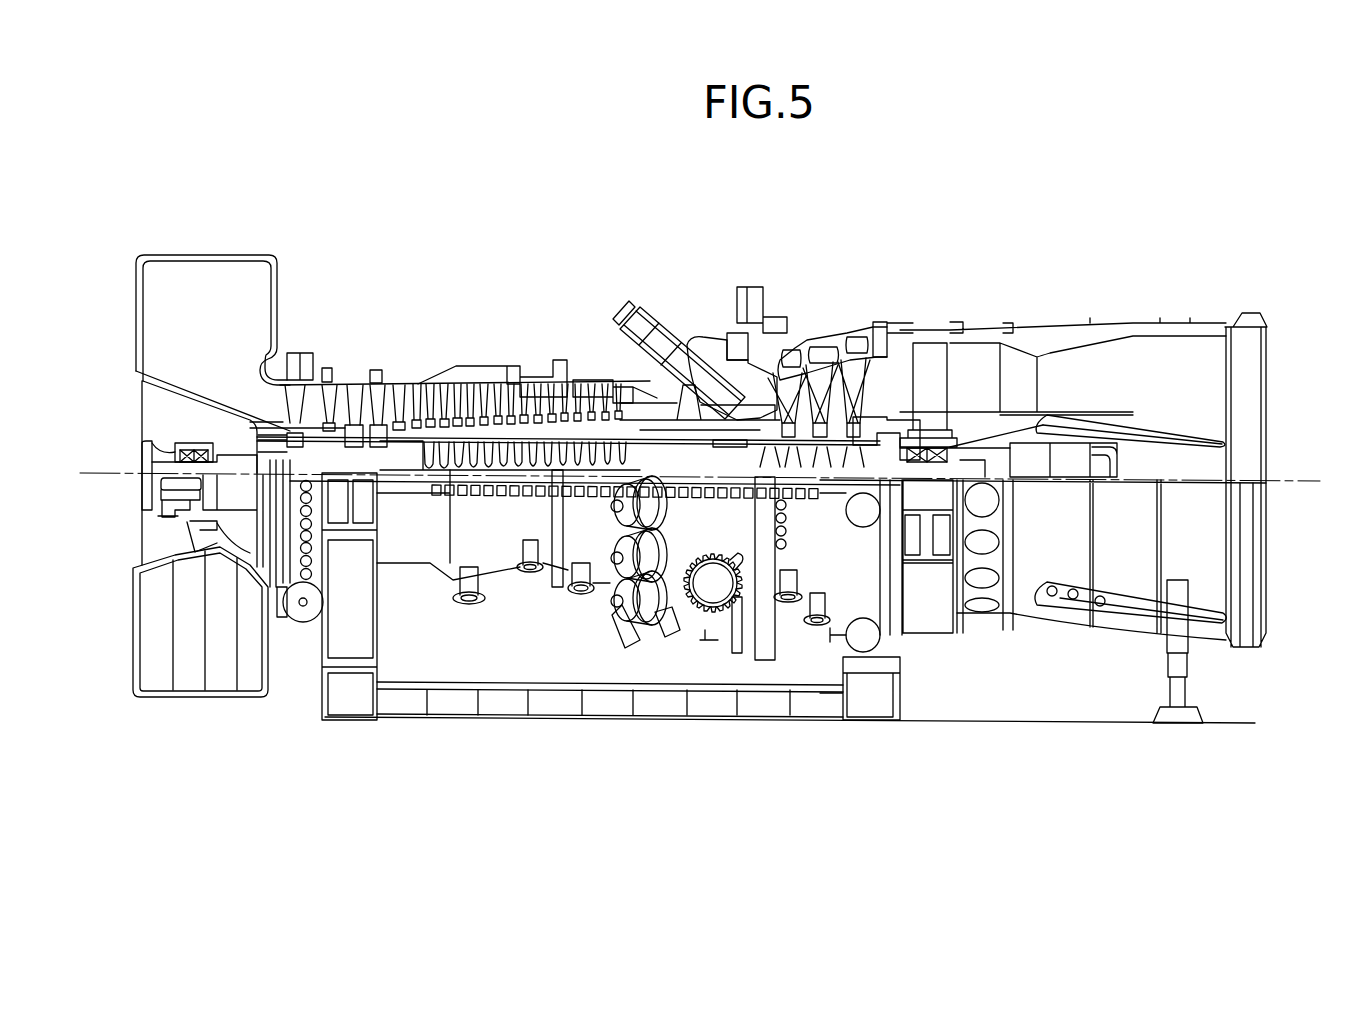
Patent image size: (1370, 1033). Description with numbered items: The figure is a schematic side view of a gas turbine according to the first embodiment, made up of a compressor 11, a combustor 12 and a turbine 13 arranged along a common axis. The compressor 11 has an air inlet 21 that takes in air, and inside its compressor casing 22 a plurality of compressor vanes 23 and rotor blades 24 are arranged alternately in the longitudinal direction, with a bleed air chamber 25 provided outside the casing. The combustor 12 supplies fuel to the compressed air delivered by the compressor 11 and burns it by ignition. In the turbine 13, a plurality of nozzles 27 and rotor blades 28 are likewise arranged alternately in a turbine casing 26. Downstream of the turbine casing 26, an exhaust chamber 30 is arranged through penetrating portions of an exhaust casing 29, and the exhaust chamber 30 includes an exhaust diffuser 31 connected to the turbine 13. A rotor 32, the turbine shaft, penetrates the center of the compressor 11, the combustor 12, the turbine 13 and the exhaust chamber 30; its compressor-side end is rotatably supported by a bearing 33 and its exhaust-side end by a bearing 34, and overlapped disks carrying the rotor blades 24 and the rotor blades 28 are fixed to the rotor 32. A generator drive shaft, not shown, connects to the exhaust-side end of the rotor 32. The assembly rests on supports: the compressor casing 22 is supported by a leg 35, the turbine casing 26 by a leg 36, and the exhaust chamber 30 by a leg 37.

The compressor 11 is at (352, 337).
The combustor 12 is at (643, 295).
The turbine 13 is at (903, 313).
The air inlet 21 is at (150, 318).
The compressor casing 22 is at (353, 383).
The compressor vanes 23 is at (358, 388).
The rotor blades 24 is at (413, 403).
The bleed air chamber 25 is at (480, 373).
The turbine casing 26 is at (838, 345).
The nozzles 27 is at (790, 347).
The rotor blades 28 is at (755, 342).
The exhaust casing 29 is at (935, 328).
The exhaust chamber 30 is at (1190, 318).
The exhaust diffuser 31 is at (980, 345).
The rotor 32 is at (678, 405).
The bearing 33 is at (175, 452).
The bearing 34 is at (945, 452).
The leg 35 is at (325, 650).
The leg 36 is at (887, 637).
The leg 37 is at (1190, 668).